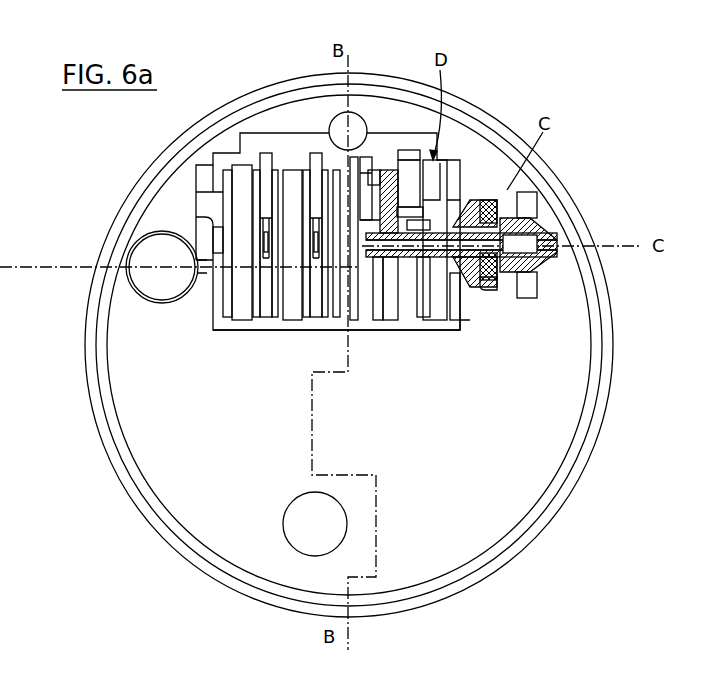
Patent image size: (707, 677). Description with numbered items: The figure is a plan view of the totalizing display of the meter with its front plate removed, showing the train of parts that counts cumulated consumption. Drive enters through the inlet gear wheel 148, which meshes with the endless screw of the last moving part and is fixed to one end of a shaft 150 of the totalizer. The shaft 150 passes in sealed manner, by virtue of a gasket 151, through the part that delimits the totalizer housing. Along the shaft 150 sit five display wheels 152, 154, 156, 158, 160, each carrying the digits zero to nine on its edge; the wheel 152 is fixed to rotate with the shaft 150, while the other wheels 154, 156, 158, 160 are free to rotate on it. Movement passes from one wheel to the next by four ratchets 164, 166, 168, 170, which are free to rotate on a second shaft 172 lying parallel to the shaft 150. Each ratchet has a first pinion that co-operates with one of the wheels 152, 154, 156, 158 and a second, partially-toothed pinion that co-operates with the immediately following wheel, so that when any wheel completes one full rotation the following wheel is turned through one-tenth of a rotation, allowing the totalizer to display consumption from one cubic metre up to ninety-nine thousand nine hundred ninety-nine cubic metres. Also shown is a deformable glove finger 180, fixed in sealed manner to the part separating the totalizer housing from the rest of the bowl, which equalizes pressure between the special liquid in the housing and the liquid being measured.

The inlet gear wheel 148 is at (537, 205).
The shaft 150 is at (470, 333).
The gasket 151 is at (492, 305).
The display wheel 152 is at (437, 310).
The display wheel 154 is at (392, 310).
The display wheel 156 is at (340, 310).
The display wheel 158 is at (290, 304).
The display wheel 160 is at (242, 308).
The ratchet 164 is at (447, 170).
The ratchet 166 is at (372, 160).
The ratchet 168 is at (312, 150).
The ratchet 170 is at (262, 150).
The second shaft 172 is at (468, 185).
The deformable glove finger 180 is at (143, 258).